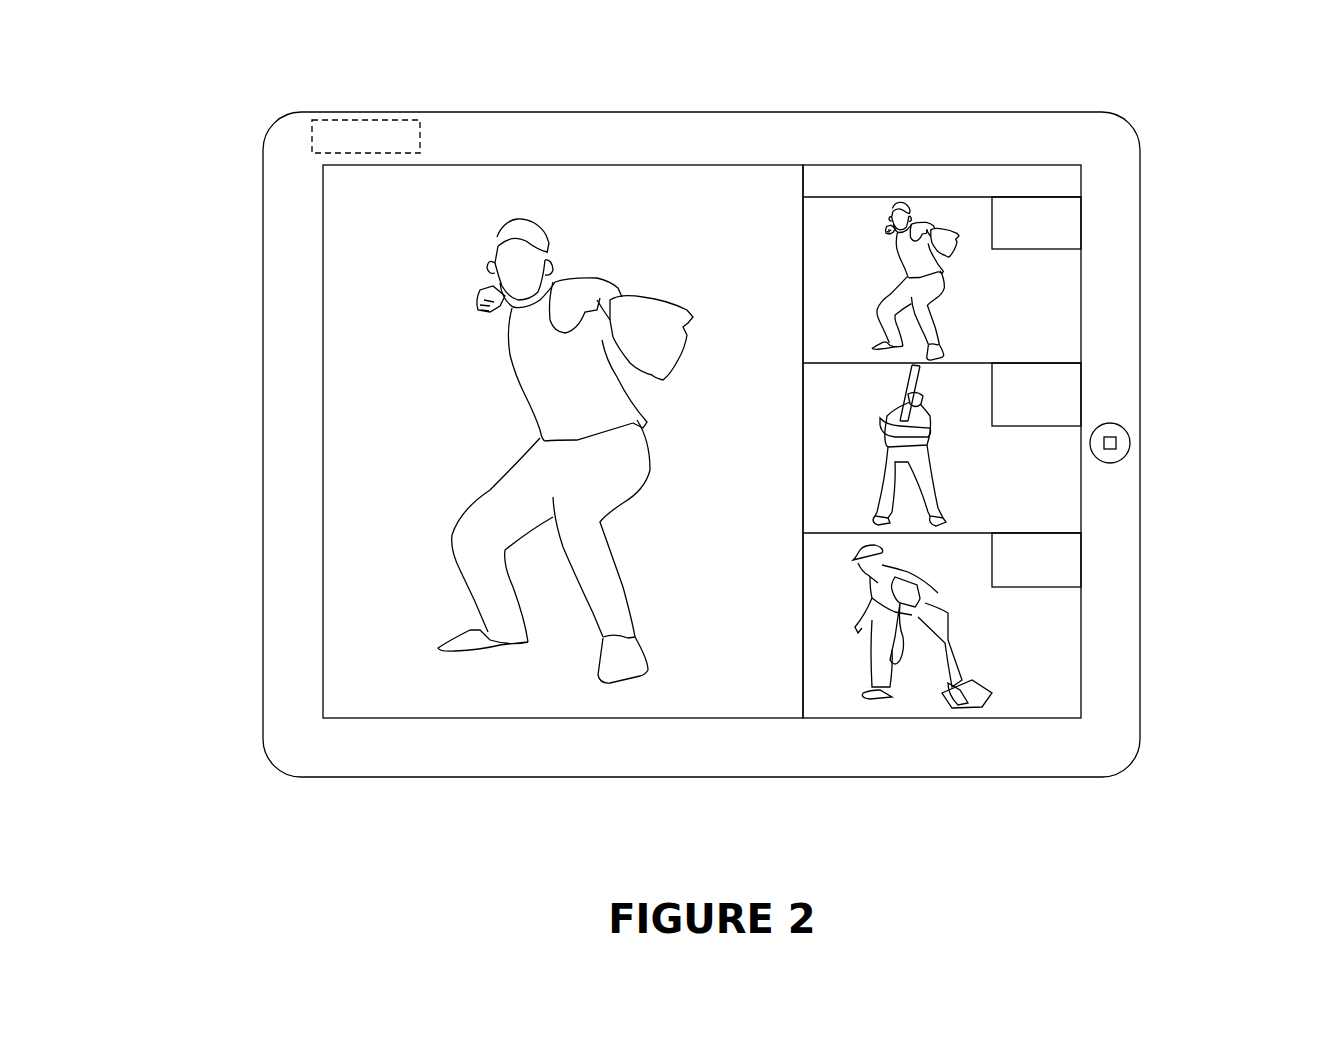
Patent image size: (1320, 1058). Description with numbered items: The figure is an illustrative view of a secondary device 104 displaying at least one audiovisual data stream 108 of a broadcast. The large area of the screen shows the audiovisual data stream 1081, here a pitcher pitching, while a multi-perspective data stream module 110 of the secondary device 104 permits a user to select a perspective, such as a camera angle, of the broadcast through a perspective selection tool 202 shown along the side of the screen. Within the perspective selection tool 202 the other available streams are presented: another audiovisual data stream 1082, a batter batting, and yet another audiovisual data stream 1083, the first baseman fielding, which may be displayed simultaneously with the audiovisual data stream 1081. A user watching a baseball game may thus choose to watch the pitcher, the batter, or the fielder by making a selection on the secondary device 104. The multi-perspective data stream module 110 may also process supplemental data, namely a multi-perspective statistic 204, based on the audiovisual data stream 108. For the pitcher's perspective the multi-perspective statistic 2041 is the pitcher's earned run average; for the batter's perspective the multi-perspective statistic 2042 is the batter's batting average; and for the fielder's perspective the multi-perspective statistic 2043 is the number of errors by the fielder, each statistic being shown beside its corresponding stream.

The secondary device 104 is at (1037, 750).
The multi-perspective data stream module 110 is at (330, 137).
The audiovisual data stream 108 is at (355, 437).
The audiovisual data stream 1081 is at (1025, 331).
The audiovisual data stream 1082 is at (1025, 497).
The audiovisual data stream 1083 is at (1025, 687).
The perspective selection tool 202 is at (1070, 181).
The multi-perspective statistic 204 is at (1141, 392).
The multi-perspective statistic 2041 is at (1070, 224).
The multi-perspective statistic 2042 is at (1075, 383).
The multi-perspective statistic 2043 is at (1073, 569).